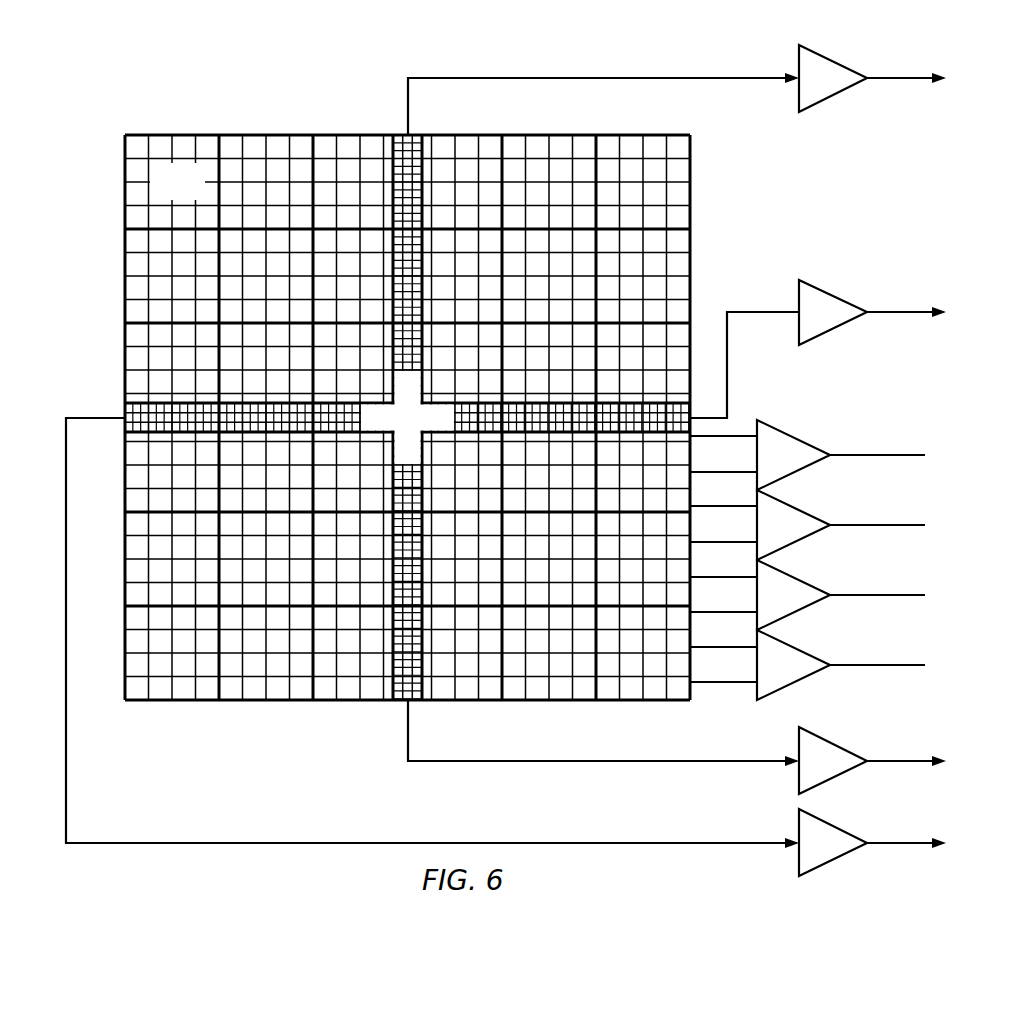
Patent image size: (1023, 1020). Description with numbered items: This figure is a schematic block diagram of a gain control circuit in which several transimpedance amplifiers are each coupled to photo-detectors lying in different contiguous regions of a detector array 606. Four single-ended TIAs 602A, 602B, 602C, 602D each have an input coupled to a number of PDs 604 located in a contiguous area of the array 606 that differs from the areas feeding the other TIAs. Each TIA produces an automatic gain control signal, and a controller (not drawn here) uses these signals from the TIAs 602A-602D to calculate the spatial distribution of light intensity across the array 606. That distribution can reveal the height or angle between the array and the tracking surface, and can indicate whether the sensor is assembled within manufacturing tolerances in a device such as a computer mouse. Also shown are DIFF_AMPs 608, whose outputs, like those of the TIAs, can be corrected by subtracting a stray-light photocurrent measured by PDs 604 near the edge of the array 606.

The photo-detectors 604 is at (432, 460).
The array 606 is at (196, 195).
The TIA 602A is at (836, 95).
The TIA 602B is at (836, 778).
The TIA 602C is at (840, 327).
The TIA 602D is at (836, 860).
The DIFF_AMPs 608 is at (795, 414).